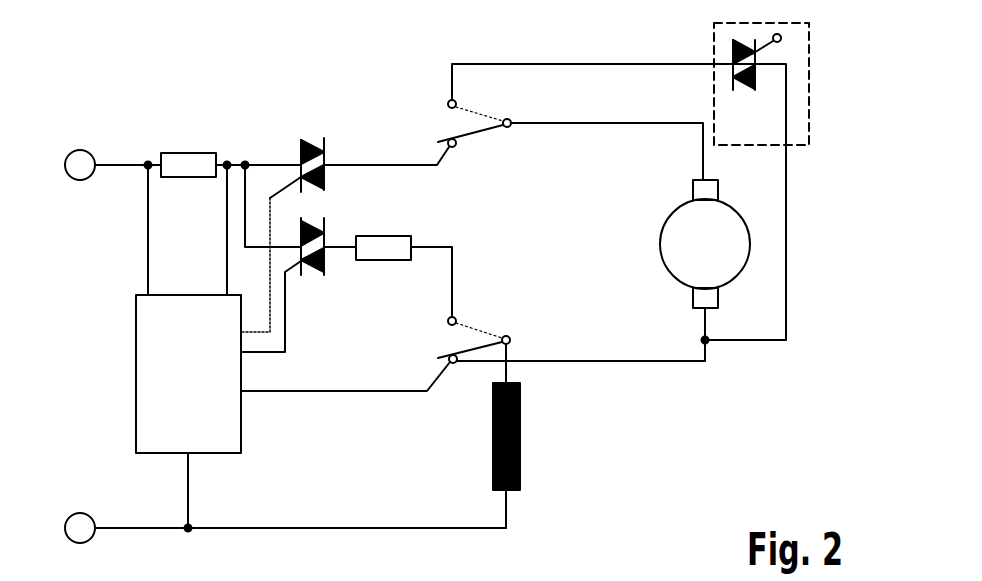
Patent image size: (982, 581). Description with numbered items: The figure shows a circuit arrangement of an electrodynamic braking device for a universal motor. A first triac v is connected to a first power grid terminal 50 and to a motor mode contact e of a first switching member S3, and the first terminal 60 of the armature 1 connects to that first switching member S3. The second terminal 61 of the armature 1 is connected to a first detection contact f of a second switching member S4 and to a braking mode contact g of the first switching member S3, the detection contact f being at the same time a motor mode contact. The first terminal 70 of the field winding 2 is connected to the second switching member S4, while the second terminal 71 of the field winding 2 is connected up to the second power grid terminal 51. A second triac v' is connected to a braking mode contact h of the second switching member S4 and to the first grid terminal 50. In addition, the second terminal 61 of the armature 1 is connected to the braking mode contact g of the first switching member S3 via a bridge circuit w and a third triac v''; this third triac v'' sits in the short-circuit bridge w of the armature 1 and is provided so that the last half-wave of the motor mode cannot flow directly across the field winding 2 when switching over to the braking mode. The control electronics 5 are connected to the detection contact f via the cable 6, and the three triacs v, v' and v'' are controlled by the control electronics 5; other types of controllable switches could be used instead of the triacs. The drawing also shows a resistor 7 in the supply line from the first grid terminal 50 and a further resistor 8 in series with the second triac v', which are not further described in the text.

The armature 1 is at (660, 244).
The field winding 2 is at (493, 438).
The control electronics 5 is at (136, 373).
The cable 6 is at (333, 392).
The shunt resistor 7 is at (187, 177).
The resistor 8 is at (383, 260).
The first power grid terminal 50 is at (80, 150).
The second power grid terminal 51 is at (80, 513).
The first terminal of the armature 60 is at (618, 123).
The second terminal of the armature 61 is at (707, 320).
The first terminal of the field winding 70 is at (509, 378).
The second terminal of the field winding 71 is at (508, 508).
The first triac v is at (282, 205).
The second triac v' is at (282, 285).
The third triac v'' is at (761, 84).
The first switching member S3 is at (509, 127).
The second switching member S4 is at (508, 336).
The motor mode contact e is at (455, 147).
The first detection contact f is at (455, 363).
The braking mode contact g is at (449, 100).
The braking mode contact h is at (455, 318).
The bridge circuit w is at (788, 222).